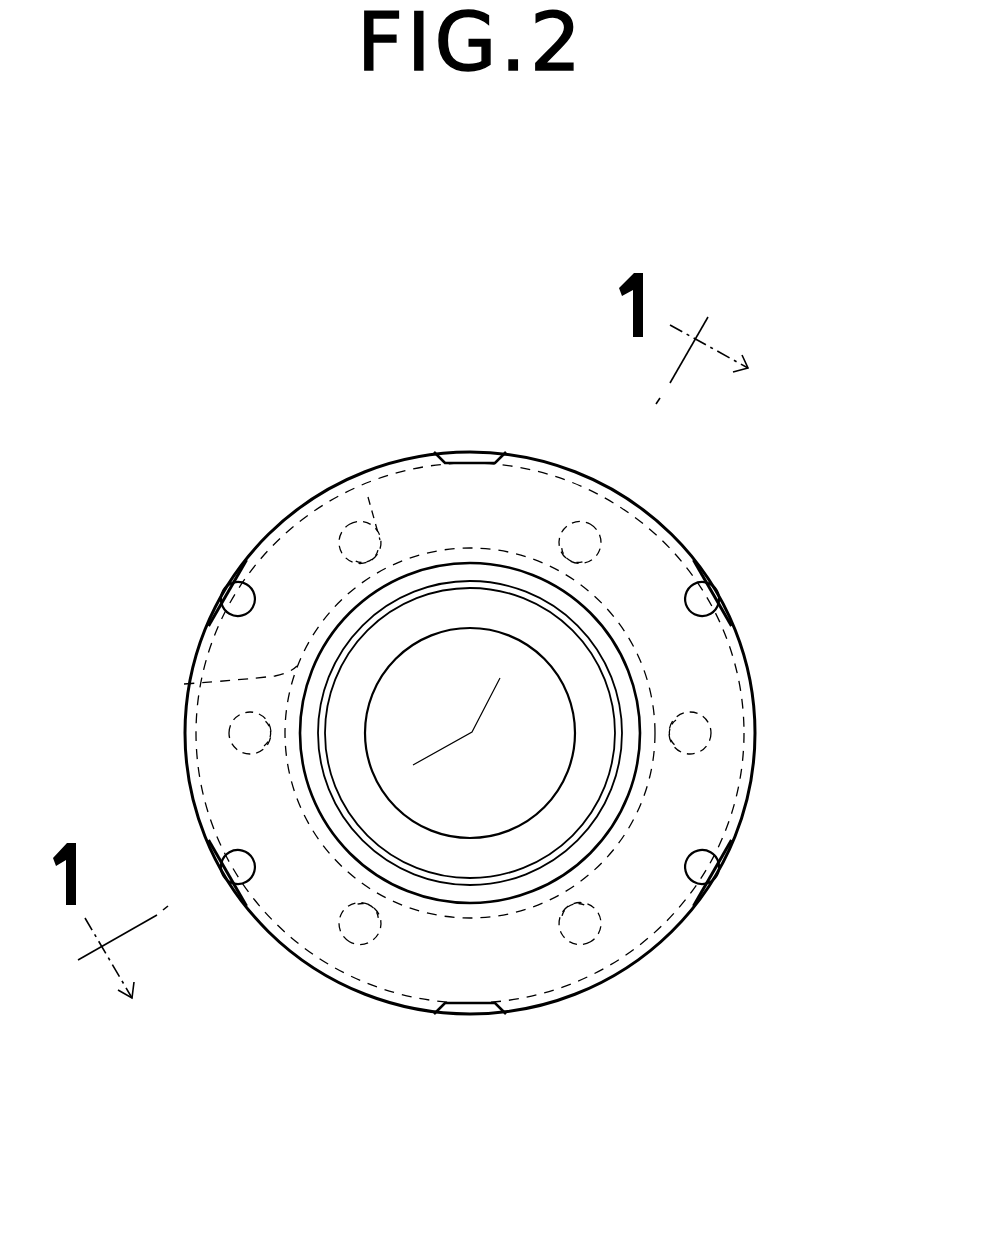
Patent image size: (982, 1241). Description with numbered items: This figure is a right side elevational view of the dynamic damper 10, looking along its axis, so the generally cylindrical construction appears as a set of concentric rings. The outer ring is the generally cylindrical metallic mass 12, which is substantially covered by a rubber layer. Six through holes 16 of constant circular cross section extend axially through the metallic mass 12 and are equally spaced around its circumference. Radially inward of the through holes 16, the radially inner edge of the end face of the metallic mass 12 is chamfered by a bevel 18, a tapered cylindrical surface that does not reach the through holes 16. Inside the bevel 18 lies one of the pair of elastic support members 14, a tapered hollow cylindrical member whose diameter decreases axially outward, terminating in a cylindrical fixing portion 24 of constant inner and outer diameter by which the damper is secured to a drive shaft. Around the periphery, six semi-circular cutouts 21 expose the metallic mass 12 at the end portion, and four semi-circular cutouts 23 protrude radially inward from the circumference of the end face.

The dynamic damper 10 is at (714, 440).
The metallic mass 12 is at (692, 665).
The elastic support members 14 is at (627, 780).
The through holes 16 is at (366, 522).
The bevels 18 is at (186, 684).
The cutouts 21 is at (472, 455).
The cutouts 23 is at (257, 543).
The cylindrical fixing portions 24 is at (518, 850).